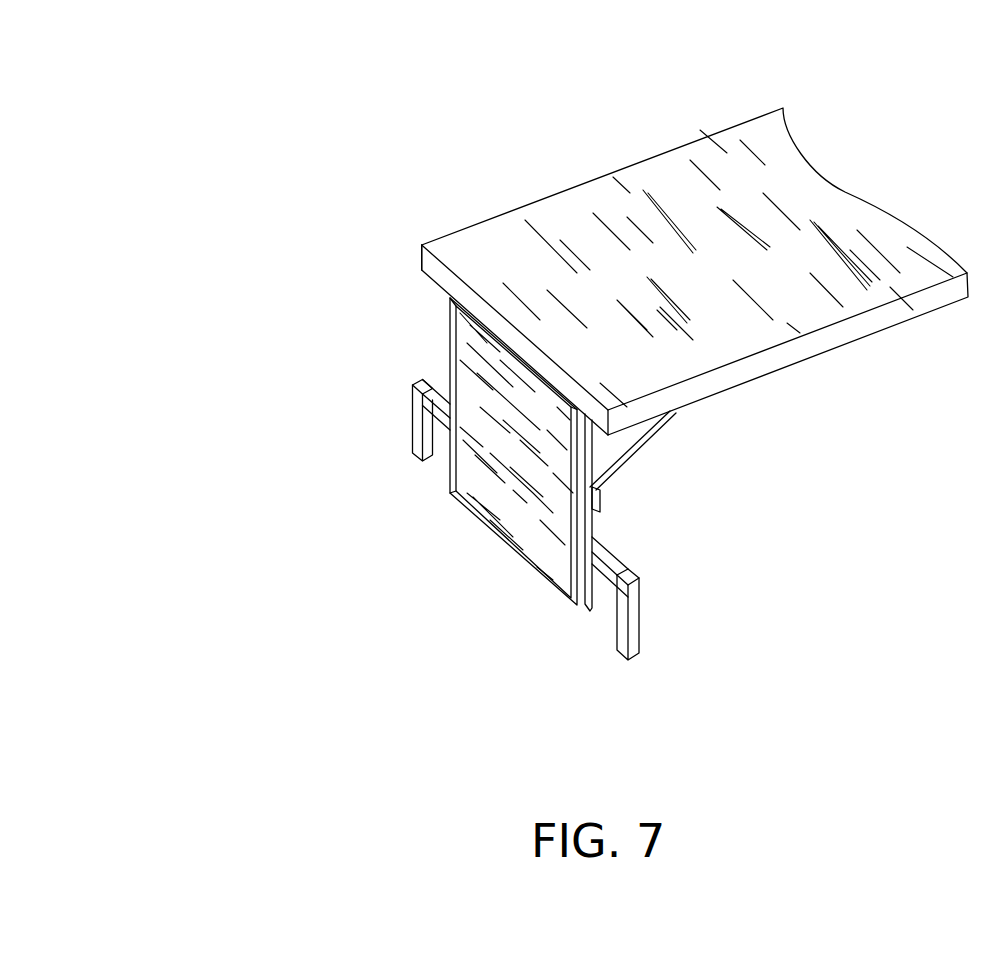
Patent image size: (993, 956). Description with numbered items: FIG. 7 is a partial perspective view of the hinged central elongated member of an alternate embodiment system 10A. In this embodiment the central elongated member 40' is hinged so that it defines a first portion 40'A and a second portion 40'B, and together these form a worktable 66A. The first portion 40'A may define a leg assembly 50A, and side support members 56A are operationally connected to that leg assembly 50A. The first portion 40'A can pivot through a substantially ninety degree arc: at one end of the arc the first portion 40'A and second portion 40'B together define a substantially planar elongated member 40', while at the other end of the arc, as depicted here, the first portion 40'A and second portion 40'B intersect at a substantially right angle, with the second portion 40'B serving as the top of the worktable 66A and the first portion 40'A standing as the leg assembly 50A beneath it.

The system 10A is at (213, 402).
The central elongated member 40' is at (769, 492).
The first portion 40'A is at (448, 425).
The second portion 40'B is at (695, 223).
The leg assembly 50A is at (610, 690).
The side support members 56A is at (618, 577).
The worktable 66A is at (338, 200).